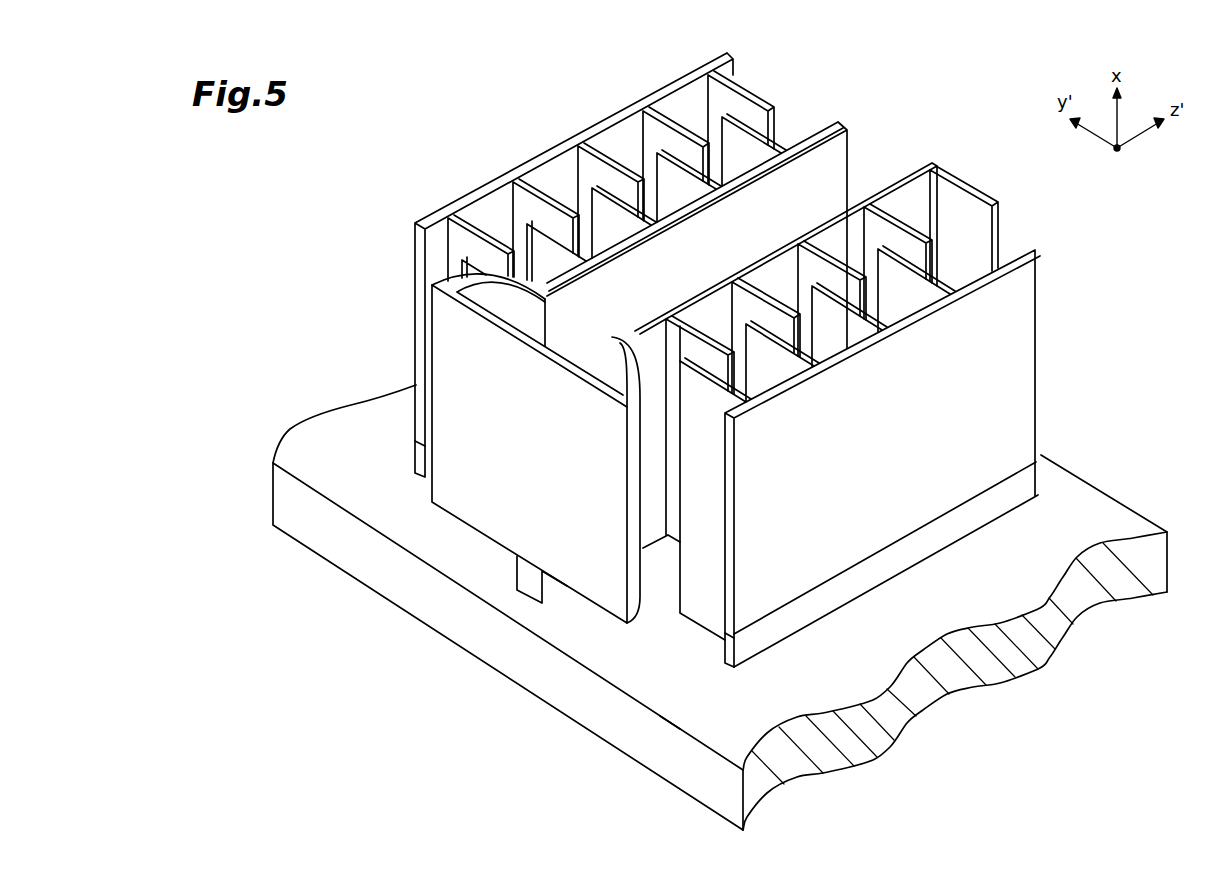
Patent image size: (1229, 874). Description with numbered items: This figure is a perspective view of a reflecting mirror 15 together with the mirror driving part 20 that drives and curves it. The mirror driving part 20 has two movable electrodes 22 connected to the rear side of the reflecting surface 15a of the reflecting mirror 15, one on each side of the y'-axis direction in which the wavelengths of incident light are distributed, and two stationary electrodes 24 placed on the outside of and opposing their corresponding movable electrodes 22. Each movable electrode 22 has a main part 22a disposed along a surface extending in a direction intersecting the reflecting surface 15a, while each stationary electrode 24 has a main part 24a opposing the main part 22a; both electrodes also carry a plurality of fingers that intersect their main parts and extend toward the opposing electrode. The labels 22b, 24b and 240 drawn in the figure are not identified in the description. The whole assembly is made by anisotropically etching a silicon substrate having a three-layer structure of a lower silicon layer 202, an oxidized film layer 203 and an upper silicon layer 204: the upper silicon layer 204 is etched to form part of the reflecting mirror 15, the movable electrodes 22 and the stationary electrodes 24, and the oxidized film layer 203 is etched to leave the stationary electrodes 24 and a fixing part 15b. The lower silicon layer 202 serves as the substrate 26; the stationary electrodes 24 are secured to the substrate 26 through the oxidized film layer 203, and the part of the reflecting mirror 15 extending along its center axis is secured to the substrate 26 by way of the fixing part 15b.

The reflecting mirror 15 is at (450, 284).
The reflecting surface 15a is at (457, 343).
The fixing part 15b is at (533, 578).
The mirror driving part 20 is at (363, 185).
The movable electrode 22 is at (920, 117).
The main part 22a is at (888, 136).
The fin bent portion 22b is at (778, 147).
The stationary electrode 24 is at (840, 63).
The main part 24a is at (729, 50).
The fin bent portion 24b is at (772, 97).
The substrate 26 is at (672, 703).
The lower silicon layer 202 is at (990, 678).
The oxidized film layer 203 is at (416, 459).
The upper silicon layer 204 is at (699, 286).
The back plate 240 is at (479, 221).